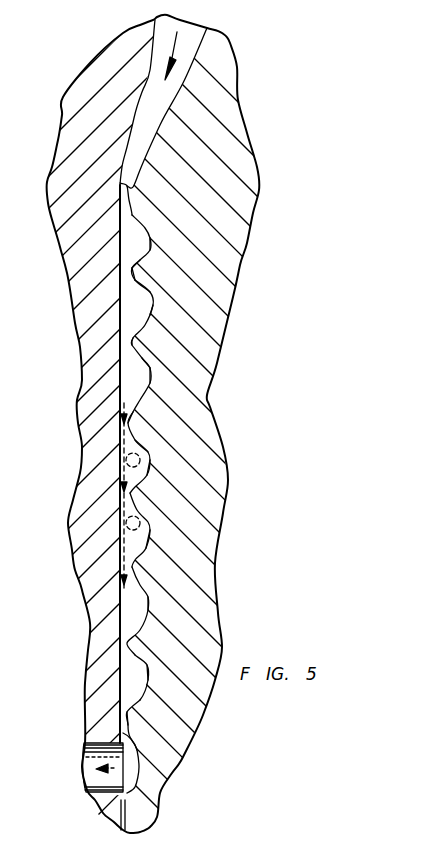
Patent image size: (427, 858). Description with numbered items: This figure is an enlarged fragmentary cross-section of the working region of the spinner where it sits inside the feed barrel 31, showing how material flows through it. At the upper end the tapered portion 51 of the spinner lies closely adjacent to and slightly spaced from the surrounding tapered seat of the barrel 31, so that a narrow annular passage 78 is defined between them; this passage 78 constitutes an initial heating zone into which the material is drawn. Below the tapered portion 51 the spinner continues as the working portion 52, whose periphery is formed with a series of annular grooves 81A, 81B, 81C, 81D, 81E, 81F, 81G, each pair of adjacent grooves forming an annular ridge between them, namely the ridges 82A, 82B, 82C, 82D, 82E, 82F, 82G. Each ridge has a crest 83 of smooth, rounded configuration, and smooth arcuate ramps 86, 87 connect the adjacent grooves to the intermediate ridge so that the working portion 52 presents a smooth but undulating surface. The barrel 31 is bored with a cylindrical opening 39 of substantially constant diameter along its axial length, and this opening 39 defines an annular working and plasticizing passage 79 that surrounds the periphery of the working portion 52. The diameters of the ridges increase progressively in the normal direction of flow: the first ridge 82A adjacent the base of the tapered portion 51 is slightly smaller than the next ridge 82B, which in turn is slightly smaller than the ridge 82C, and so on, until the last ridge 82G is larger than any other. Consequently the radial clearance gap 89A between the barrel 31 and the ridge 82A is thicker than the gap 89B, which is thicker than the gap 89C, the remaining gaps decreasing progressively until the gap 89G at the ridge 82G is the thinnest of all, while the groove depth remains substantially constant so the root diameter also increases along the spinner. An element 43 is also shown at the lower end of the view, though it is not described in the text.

The feed barrel 31 is at (122, 48).
The tapered portion 51 is at (206, 77).
The working portion 52 is at (224, 414).
The annular passage 78 is at (138, 136).
The cylindrical opening 39 is at (119, 200).
The retaining strip 43 is at (88, 780).
The annular working and plasticizing passage 79 is at (130, 522).
The crest 83 is at (120, 360).
The ramp 86 is at (125, 279).
The ramp 87 is at (120, 302).
The annular groove 81A is at (147, 236).
The annular groove 81B is at (147, 322).
The annular groove 81C is at (150, 388).
The annular groove 81D is at (133, 458).
The annular groove 81E is at (143, 537).
The annular groove 81F is at (147, 605).
The annular groove 81G is at (147, 677).
The first annular ridge 82A is at (136, 281).
The annular ridge 82B is at (137, 352).
The annular ridge 82C is at (143, 430).
The annular ridge 82D is at (133, 493).
The annular ridge 82E is at (133, 567).
The annular ridge 82F is at (128, 643).
The last annular ridge 82G is at (129, 713).
The radial clearance gap 89A is at (127, 280).
The radial gap 89B is at (132, 341).
The radial gap 89C is at (128, 423).
The radial gap 89G is at (124, 712).